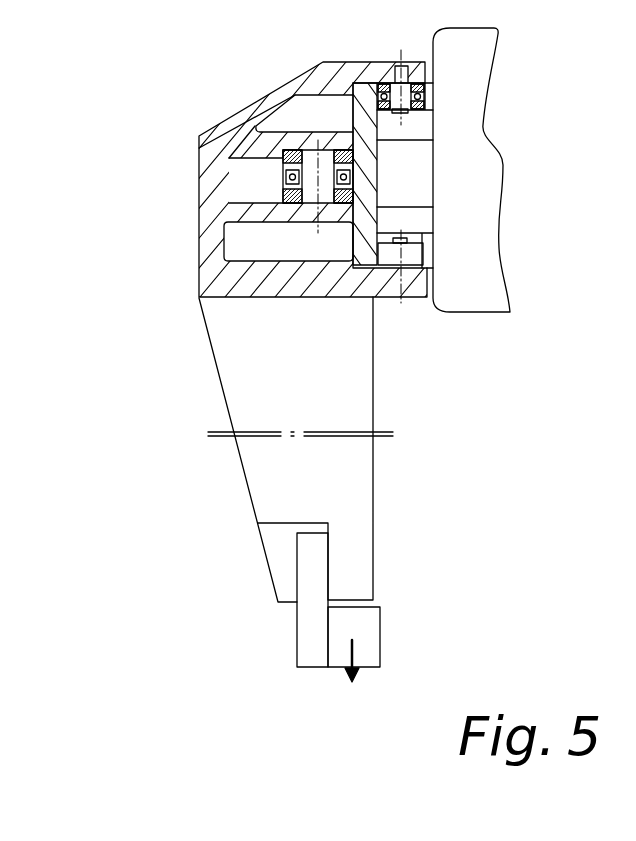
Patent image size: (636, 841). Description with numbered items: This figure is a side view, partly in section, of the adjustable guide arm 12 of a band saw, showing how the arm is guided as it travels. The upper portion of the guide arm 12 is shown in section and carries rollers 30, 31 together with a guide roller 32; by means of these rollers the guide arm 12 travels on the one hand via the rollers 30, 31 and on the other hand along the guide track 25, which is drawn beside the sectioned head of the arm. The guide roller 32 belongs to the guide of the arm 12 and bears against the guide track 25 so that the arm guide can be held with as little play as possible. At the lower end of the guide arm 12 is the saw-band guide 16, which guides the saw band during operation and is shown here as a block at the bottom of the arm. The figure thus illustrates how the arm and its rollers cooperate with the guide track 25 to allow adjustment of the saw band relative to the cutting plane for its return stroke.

The guide arm 12 is at (275, 376).
The saw-band guide 16 is at (323, 642).
The guide track 25 is at (364, 177).
The roller 30 is at (423, 101).
The roller 31 is at (412, 257).
The guide roller 32 is at (284, 178).